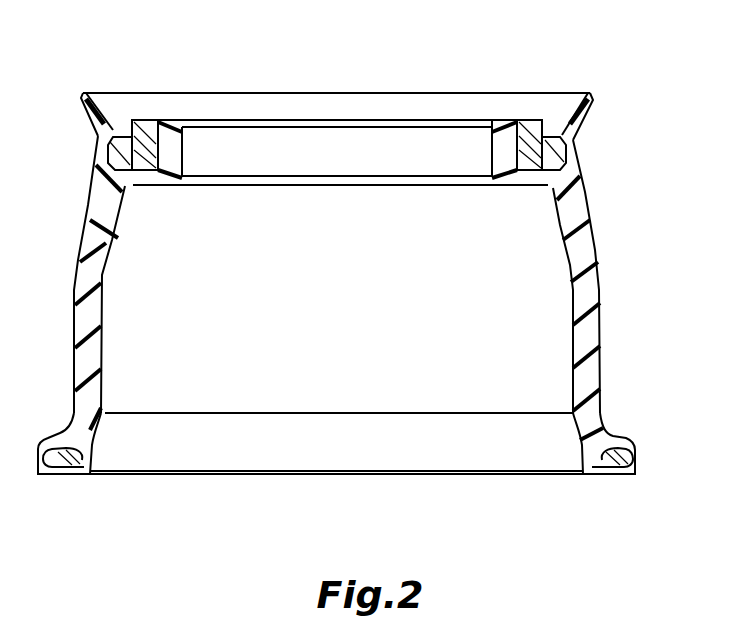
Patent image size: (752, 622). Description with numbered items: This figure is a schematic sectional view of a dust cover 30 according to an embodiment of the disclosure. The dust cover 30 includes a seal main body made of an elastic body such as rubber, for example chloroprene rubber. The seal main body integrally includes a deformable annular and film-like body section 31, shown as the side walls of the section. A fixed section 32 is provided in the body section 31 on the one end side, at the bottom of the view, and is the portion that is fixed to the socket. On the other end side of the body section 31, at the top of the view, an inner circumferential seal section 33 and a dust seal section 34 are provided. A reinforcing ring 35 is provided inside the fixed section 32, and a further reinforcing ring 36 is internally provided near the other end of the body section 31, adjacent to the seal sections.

The dust cover 30 is at (383, 282).
The body section 31 is at (592, 317).
The fixed section 32 is at (637, 443).
The inner circumferential seal section 33 is at (492, 142).
The dust seal section 34 is at (585, 105).
The reinforcing ring 35 is at (613, 472).
The reinforcing ring 36 is at (572, 147).